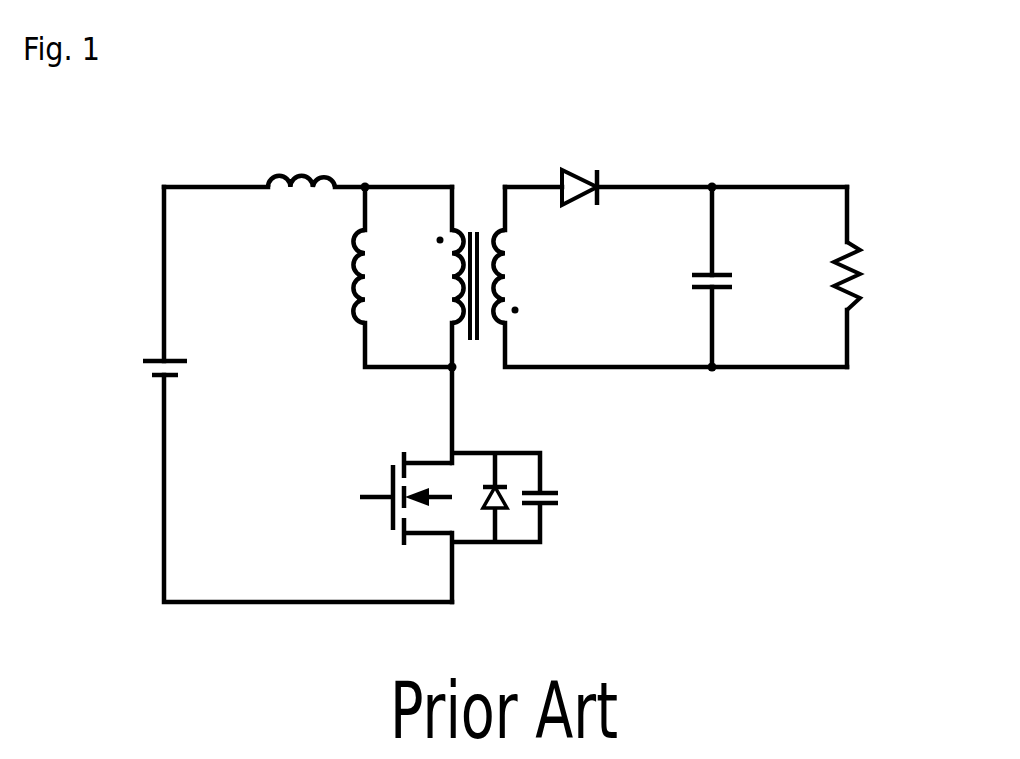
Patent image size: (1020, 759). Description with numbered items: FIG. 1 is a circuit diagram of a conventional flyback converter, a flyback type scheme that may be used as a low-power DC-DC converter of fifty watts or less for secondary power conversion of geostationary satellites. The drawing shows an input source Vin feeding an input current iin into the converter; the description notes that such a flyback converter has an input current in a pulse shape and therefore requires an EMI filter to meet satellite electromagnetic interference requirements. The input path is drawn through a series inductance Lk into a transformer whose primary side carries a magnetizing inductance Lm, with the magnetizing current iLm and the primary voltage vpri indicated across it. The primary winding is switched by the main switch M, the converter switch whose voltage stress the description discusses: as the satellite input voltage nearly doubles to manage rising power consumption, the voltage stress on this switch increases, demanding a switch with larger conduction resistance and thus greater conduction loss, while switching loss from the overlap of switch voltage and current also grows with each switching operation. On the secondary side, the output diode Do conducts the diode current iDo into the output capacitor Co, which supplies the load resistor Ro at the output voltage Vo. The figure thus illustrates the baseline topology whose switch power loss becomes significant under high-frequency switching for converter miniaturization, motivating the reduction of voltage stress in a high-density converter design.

The input voltage source Vin is at (143, 345).
The input current iin is at (203, 165).
The leakage inductance Lk is at (301, 164).
The magnetizing inductance Lm is at (385, 283).
The magnetizing inductor current iLm is at (385, 262).
The primary voltage vpri is at (309, 277).
The output diode Do is at (584, 163).
The output diode current iDo is at (596, 222).
The output capacitor Co is at (729, 260).
The load resistor Ro is at (826, 293).
The output voltage Vo is at (899, 282).
The main switch (MOSFET) M is at (445, 504).